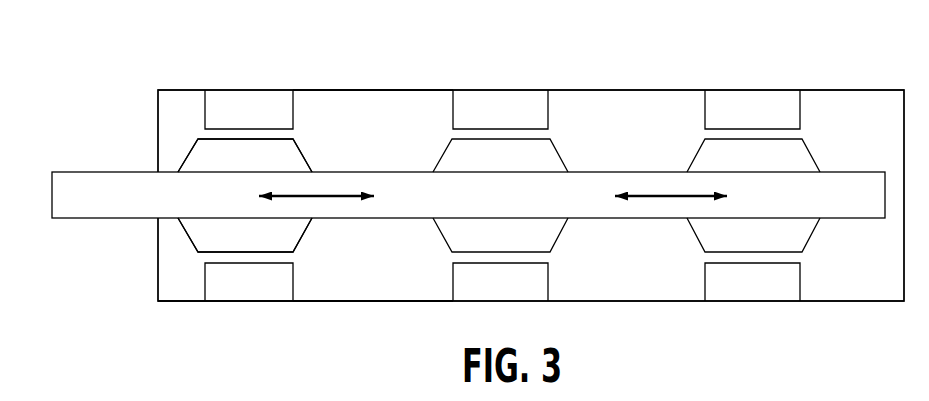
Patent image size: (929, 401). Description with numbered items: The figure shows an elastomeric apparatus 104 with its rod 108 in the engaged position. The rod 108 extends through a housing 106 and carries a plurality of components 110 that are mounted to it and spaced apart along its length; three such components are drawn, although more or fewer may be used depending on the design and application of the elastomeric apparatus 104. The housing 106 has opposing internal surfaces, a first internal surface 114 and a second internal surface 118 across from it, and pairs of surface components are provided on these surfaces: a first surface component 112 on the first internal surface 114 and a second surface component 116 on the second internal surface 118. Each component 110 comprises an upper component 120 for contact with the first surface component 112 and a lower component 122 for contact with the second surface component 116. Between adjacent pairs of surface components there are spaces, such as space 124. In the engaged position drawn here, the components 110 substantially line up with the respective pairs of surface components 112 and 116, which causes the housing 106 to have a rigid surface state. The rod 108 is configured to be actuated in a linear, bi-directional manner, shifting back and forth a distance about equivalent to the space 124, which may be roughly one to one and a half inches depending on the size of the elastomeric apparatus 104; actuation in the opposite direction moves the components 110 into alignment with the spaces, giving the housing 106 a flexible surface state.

The elastomeric apparatus 104 is at (303, 41).
The housing 106 is at (183, 89).
The rod 108 is at (117, 171).
The components 110 is at (184, 141).
The first surface component 112 is at (247, 93).
The first internal surface 114 is at (350, 96).
The second surface component 116 is at (249, 290).
The second internal surface 118 is at (388, 297).
The upper component 120 is at (259, 167).
The lower component 122 is at (259, 243).
The space 124 is at (376, 312).